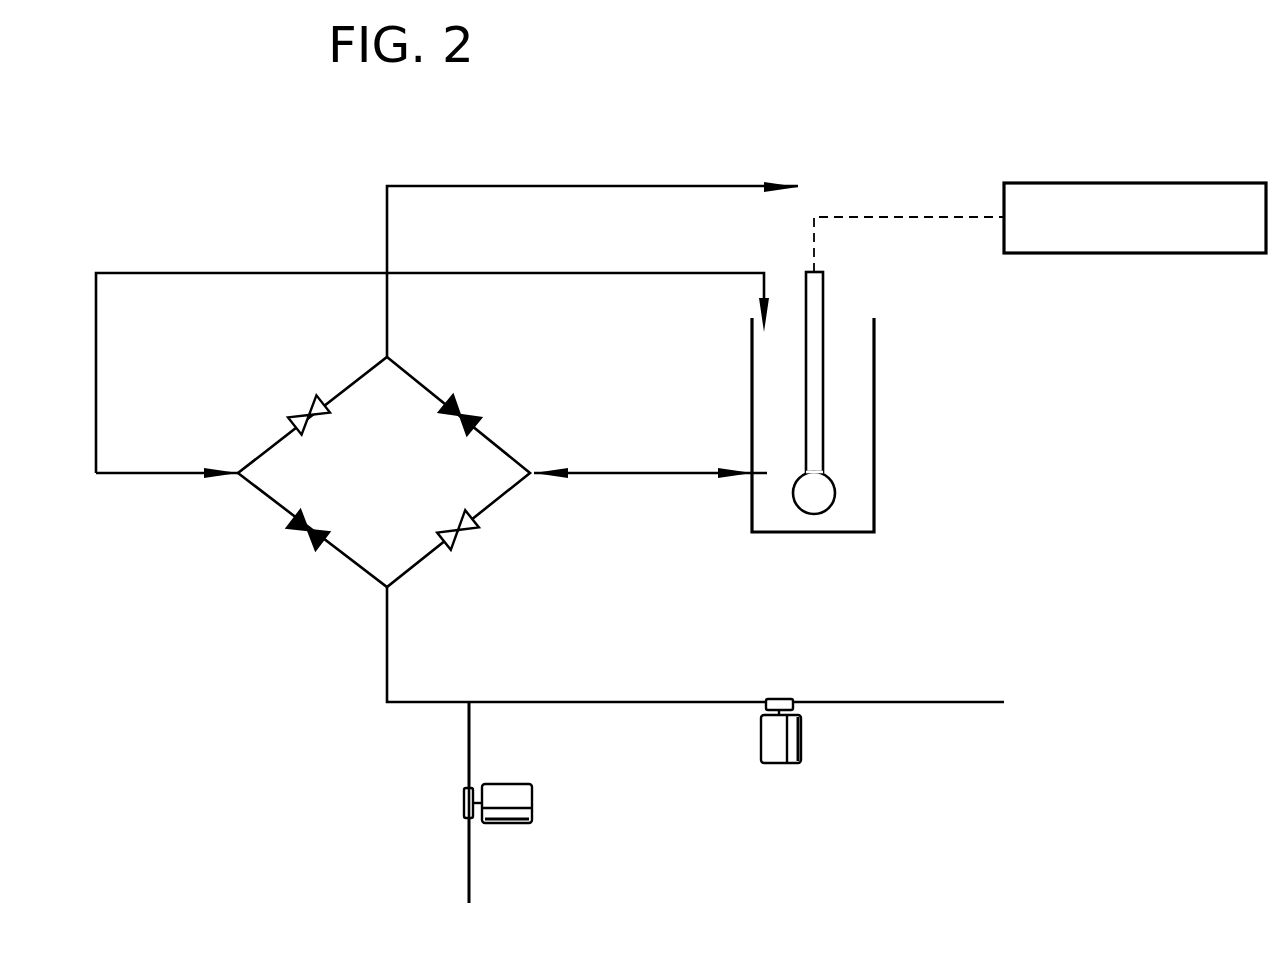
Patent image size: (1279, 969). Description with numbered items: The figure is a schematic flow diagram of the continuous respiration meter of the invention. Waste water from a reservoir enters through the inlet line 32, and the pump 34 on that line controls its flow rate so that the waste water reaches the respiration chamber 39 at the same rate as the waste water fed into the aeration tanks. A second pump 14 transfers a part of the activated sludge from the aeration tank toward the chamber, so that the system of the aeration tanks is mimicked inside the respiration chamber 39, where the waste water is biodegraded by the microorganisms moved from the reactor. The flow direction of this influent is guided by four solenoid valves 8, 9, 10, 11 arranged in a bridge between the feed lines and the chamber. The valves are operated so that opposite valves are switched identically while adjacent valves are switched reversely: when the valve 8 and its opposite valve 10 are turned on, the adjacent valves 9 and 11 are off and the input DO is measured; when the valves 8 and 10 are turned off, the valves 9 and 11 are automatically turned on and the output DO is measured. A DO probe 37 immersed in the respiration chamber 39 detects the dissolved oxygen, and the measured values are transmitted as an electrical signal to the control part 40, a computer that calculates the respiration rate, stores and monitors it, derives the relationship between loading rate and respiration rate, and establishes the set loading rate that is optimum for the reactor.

The solenoid valve 8 is at (463, 535).
The solenoid valve 9 is at (466, 410).
The solenoid valve 10 is at (305, 411).
The solenoid valve 11 is at (300, 535).
The pump 14 is at (795, 700).
The inlet line 32 is at (470, 853).
The pump 34 is at (515, 785).
The probe 37 is at (824, 288).
The respiration chamber 39 is at (868, 432).
The control part 40 is at (1155, 239).